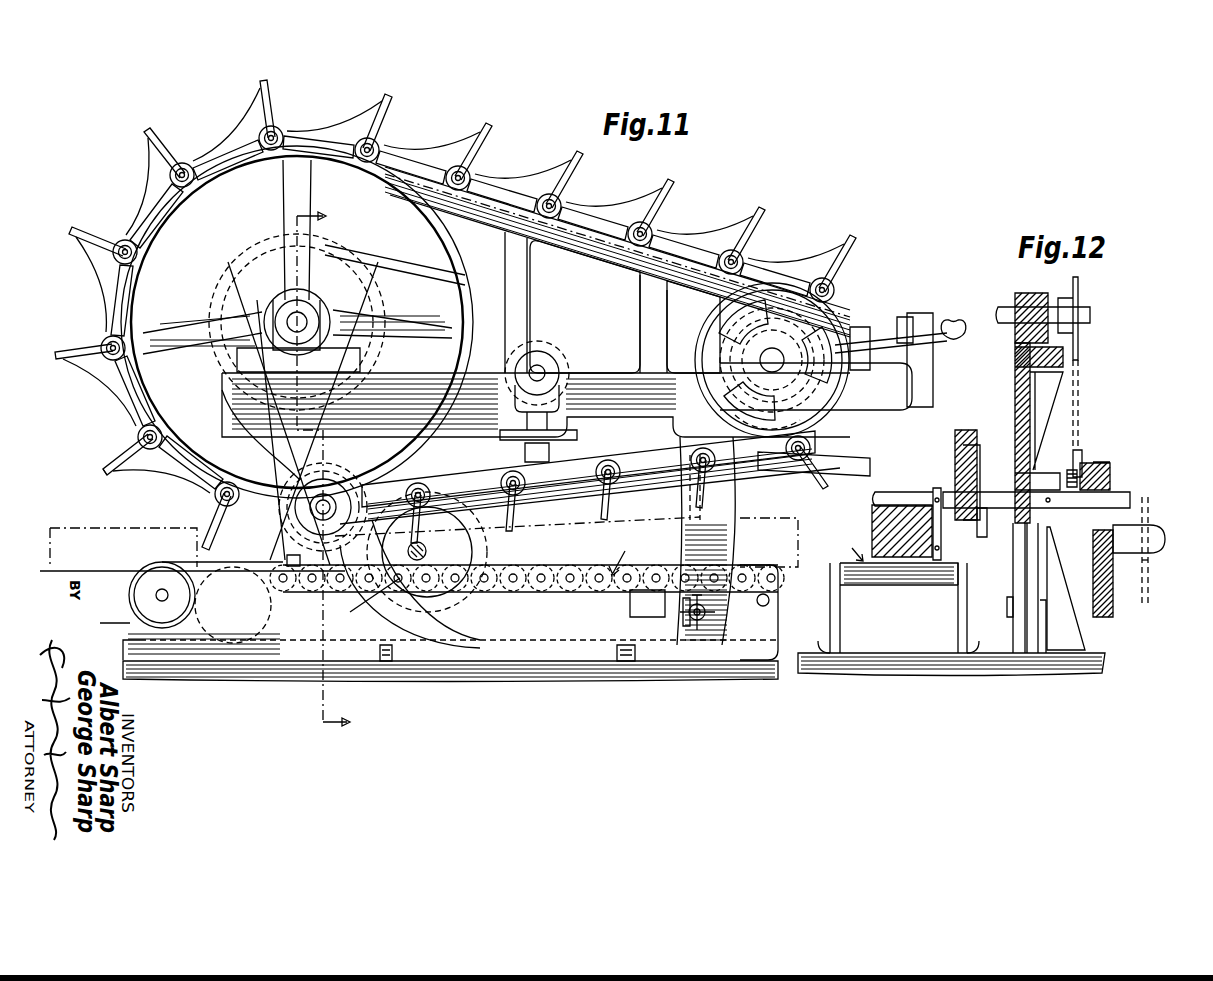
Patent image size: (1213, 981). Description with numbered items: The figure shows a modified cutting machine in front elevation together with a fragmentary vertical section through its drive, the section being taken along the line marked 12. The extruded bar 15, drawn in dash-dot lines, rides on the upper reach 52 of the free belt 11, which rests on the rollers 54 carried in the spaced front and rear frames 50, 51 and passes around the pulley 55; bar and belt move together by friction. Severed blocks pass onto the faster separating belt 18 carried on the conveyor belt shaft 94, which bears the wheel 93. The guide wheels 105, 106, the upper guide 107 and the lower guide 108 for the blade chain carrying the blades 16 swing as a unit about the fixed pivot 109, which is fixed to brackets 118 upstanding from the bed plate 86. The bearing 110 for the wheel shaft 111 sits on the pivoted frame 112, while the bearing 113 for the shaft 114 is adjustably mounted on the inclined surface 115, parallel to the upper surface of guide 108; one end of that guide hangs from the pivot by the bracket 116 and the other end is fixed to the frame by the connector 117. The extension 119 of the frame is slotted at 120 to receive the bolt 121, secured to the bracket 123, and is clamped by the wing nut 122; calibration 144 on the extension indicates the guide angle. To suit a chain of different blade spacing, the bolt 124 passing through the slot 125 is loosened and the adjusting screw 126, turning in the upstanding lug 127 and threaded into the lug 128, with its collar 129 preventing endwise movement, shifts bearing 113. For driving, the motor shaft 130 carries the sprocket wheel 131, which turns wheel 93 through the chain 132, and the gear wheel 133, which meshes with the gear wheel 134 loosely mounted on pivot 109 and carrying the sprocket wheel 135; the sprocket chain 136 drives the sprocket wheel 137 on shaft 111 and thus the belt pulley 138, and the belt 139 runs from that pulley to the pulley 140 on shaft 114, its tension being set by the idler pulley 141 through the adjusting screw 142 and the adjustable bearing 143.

In FIG. 11, the belt 11 is at (612, 552).
In FIG. 12, the belt 11 is at (850, 543).
In FIG. 11, the section line 12 is at (323, 471).
In FIG. 11, the bar 15 is at (800, 530).
In FIG. 11, the blades 16 is at (100, 472).
In FIG. 12, the blades 16 is at (900, 503).
In FIG. 11, the separating belt 18 is at (192, 597).
In FIG. 11, the front frame 50 is at (592, 662).
In FIG. 12, the front frame 50 is at (958, 630).
In FIG. 12, the rear frame 51 is at (838, 618).
In FIG. 11, the upper reach 52 is at (510, 571).
In FIG. 11, the rollers 54 is at (642, 565).
In FIG. 12, the rollers 54 is at (922, 588).
In FIG. 11, the pulley 55 is at (272, 630).
In FIG. 11, the bed plate 86 is at (710, 668).
In FIG. 12, the bed plate 86 is at (1016, 675).
In FIG. 11, the wheel 93 is at (155, 566).
In FIG. 11, the conveyor belt shaft 94 is at (163, 602).
In FIG. 11, the guide wheel 105 is at (138, 275).
In FIG. 12, the guide wheel 105 is at (958, 432).
In FIG. 11, the guide wheel 106 is at (832, 286).
In FIG. 11, the upper guide 107 is at (576, 252).
In FIG. 11, the lower guide 108 is at (870, 460).
In FIG. 12, the lower guide 108 is at (990, 436).
In FIG. 11, the fixed pivot 109 is at (316, 494).
In FIG. 12, the fixed pivot 109 is at (1140, 480).
In FIG. 11, the bearing 110 is at (320, 322).
In FIG. 12, the bearing 110 is at (1032, 287).
In FIG. 11, the wheel shaft 111 is at (305, 318).
In FIG. 12, the wheel shaft 111 is at (1090, 318).
In FIG. 11, the pivoted frame 112 is at (620, 437).
In FIG. 12, the pivoted frame 112 is at (1014, 385).
In FIG. 11, the bearing 113 is at (822, 322).
In FIG. 11, the shaft 114 is at (662, 318).
In FIG. 11, the inclined surface 115 is at (692, 345).
In FIG. 12, the bracket 116 is at (985, 532).
In FIG. 11, the connector 117 is at (692, 462).
In FIG. 12, the connector 117 is at (1000, 490).
In FIG. 11, the brackets 118 is at (460, 637).
In FIG. 12, the brackets 118 is at (1082, 630).
In FIG. 11, the extension 119 is at (737, 505).
In FIG. 12, the extension 119 is at (1025, 572).
In FIG. 11, the slot 120 is at (693, 625).
In FIG. 11, the bolt 121 is at (684, 620).
In FIG. 12, the bolt 121 is at (1007, 612).
In FIG. 11, the wing nut 122 is at (757, 604).
In FIG. 11, the bracket 123 is at (632, 618).
In FIG. 12, the bracket 123 is at (1020, 648).
In FIG. 11, the bolt 124 is at (855, 410).
In FIG. 11, the slot 125 is at (792, 394).
In FIG. 11, the adjusting screw 126 is at (952, 314).
In FIG. 11, the upstanding lug 127 is at (932, 352).
In FIG. 11, the lug 128 is at (858, 328).
In FIG. 11, the collar 129 is at (912, 318).
In FIG. 11, the motor shaft 130 is at (438, 551).
In FIG. 12, the motor shaft 130 is at (1148, 520).
In FIG. 11, the sprocket wheel 131 is at (478, 600).
In FIG. 12, the sprocket wheel 131 is at (1150, 600).
In FIG. 11, the chain 132 is at (352, 614).
In FIG. 12, the chain 132 is at (1145, 610).
In FIG. 11, the gear wheel 133 is at (433, 478).
In FIG. 12, the gear wheel 133 is at (1112, 578).
In FIG. 11, the gear wheel 134 is at (290, 566).
In FIG. 12, the gear wheel 134 is at (1105, 465).
In FIG. 11, the sprocket wheel 135 is at (373, 440).
In FIG. 12, the sprocket wheel 135 is at (1085, 450).
In FIG. 11, the sprocket chain 136 is at (356, 415).
In FIG. 12, the sprocket chain 136 is at (1080, 395).
In FIG. 11, the sprocket wheel 137 is at (318, 300).
In FIG. 12, the sprocket wheel 137 is at (1079, 290).
In FIG. 11, the belt pulley 138 is at (383, 300).
In FIG. 11, the belt 139 is at (398, 262).
In FIG. 11, the pulley 140 is at (752, 396).
In FIG. 11, the idler pulley 141 is at (552, 355).
In FIG. 11, the adjusting screw 142 is at (527, 445).
In FIG. 11, the adjustable bearing 143 is at (558, 366).
In FIG. 11, the calibration 144 is at (688, 615).